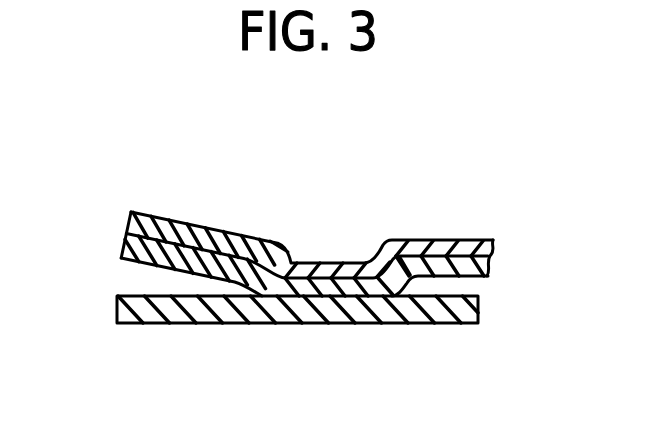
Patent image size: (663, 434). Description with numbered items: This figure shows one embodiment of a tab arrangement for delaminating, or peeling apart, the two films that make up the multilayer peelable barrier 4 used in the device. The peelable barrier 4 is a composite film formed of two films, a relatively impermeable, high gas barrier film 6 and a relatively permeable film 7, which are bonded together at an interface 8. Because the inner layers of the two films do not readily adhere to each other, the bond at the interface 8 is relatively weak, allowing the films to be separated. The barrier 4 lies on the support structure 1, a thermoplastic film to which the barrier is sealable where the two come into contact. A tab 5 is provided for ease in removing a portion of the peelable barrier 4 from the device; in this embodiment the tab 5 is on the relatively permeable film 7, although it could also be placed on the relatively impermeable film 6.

The support structure 1 is at (117, 312).
The multilayer peelable barrier 4 is at (130, 215).
The tab 5 is at (140, 267).
The film 6 is at (157, 212).
The film 7 is at (195, 249).
The interface 8 is at (275, 262).